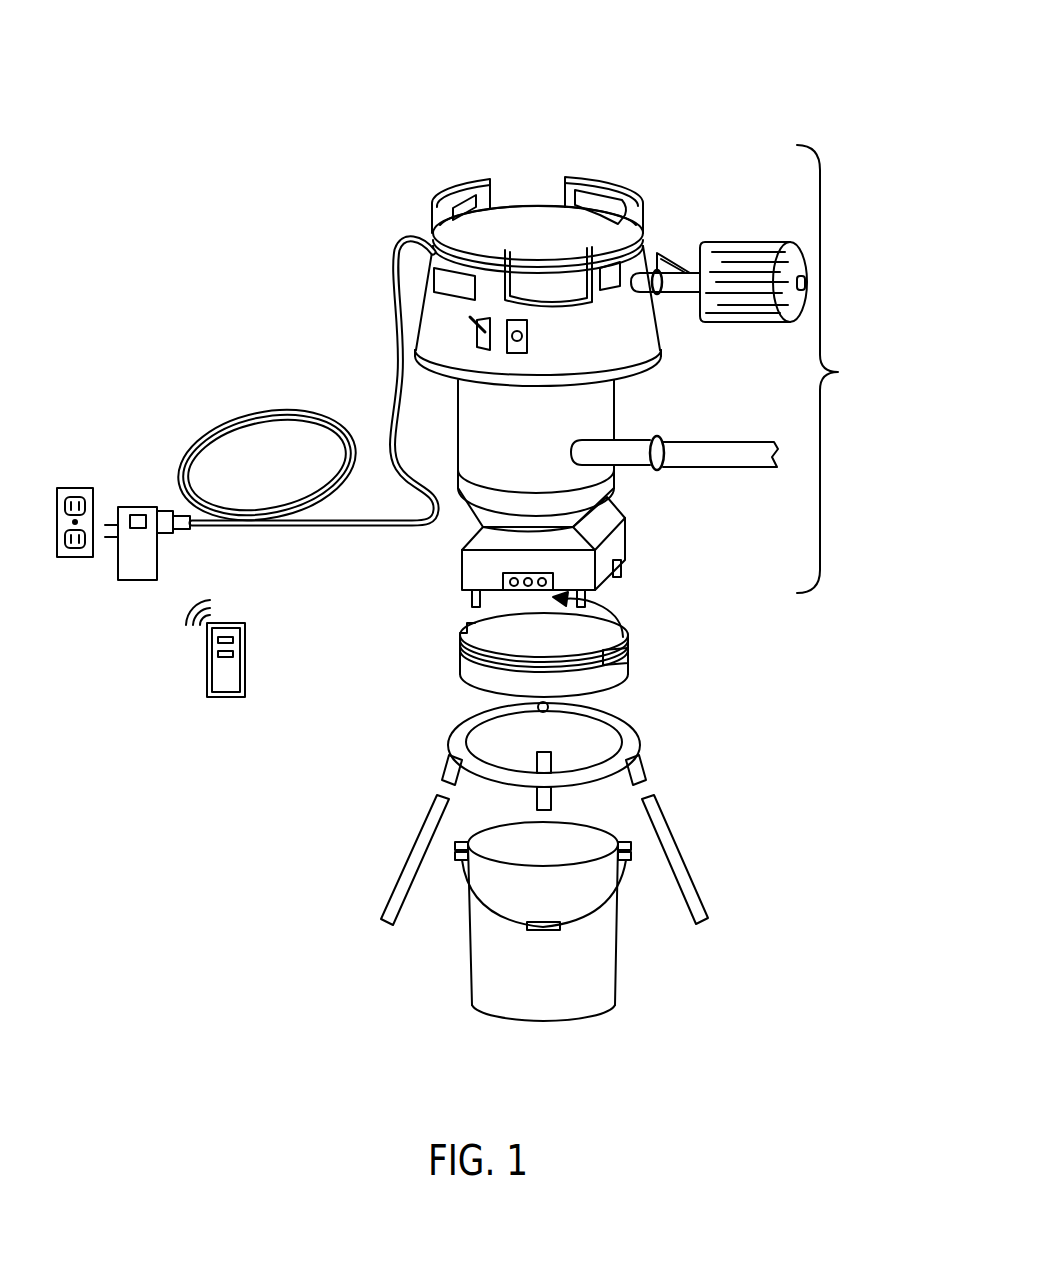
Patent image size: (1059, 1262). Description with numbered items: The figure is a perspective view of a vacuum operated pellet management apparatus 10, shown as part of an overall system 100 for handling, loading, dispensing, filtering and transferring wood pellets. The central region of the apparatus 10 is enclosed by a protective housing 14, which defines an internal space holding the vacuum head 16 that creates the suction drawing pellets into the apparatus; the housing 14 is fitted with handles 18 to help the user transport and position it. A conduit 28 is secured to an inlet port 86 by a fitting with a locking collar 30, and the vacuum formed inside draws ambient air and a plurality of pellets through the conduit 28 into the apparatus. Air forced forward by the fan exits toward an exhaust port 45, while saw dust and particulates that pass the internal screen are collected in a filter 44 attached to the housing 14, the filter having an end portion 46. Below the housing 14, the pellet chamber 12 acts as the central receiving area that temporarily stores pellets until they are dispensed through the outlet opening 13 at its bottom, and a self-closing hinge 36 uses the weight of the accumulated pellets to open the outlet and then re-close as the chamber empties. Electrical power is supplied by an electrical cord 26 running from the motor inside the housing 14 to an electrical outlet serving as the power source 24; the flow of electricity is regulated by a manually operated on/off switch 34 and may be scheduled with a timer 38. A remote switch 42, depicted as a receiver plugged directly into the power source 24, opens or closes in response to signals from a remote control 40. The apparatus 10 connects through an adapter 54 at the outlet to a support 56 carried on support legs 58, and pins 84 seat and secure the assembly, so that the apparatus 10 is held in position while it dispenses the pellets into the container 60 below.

The system 100 is at (703, 90).
The pellet management apparatus 10 is at (835, 369).
The pellet chamber 12 is at (477, 452).
The outlet opening 13 is at (623, 637).
The protective housing 14 is at (658, 367).
The vacuum head 16 is at (538, 213).
The handles 18 is at (613, 192).
The power source 24 is at (82, 490).
The electrical cord 26 is at (394, 240).
The conduit 28 is at (725, 460).
The locking collar 30 is at (659, 471).
The on/off switch 34 is at (476, 331).
The self-closing hinge 36 is at (501, 592).
The timer 38 is at (523, 347).
The remote control 40 is at (212, 680).
The remote switch 42 is at (125, 580).
The filter 44 is at (745, 240).
The exhaust port 45 is at (676, 294).
The motor end cap 46 is at (802, 322).
The adapter 54 is at (622, 677).
The support 56 is at (630, 737).
The support legs 58 is at (670, 843).
The container 60 is at (593, 990).
The pins 84 is at (588, 602).
The inlet port 86 is at (591, 448).